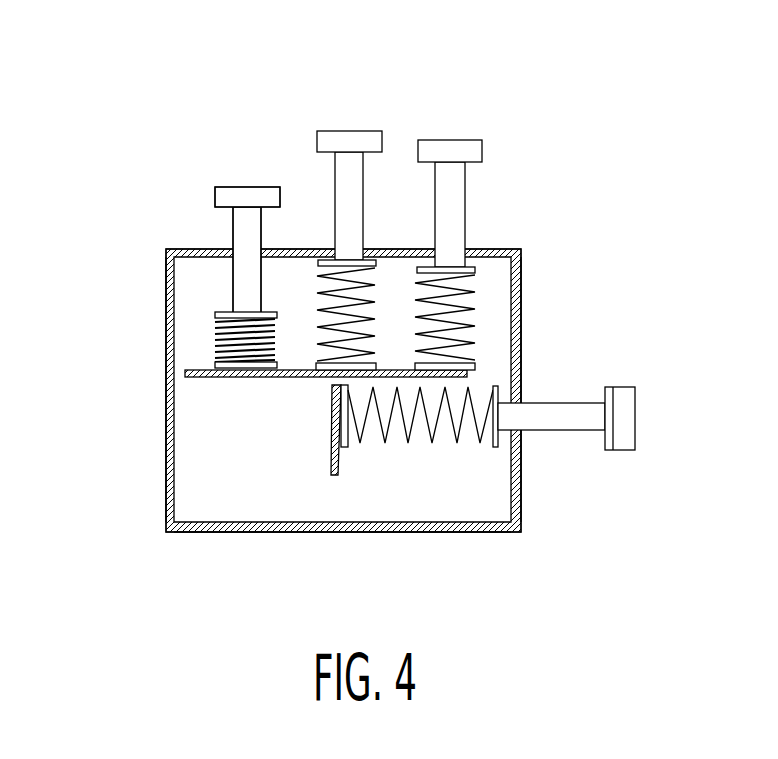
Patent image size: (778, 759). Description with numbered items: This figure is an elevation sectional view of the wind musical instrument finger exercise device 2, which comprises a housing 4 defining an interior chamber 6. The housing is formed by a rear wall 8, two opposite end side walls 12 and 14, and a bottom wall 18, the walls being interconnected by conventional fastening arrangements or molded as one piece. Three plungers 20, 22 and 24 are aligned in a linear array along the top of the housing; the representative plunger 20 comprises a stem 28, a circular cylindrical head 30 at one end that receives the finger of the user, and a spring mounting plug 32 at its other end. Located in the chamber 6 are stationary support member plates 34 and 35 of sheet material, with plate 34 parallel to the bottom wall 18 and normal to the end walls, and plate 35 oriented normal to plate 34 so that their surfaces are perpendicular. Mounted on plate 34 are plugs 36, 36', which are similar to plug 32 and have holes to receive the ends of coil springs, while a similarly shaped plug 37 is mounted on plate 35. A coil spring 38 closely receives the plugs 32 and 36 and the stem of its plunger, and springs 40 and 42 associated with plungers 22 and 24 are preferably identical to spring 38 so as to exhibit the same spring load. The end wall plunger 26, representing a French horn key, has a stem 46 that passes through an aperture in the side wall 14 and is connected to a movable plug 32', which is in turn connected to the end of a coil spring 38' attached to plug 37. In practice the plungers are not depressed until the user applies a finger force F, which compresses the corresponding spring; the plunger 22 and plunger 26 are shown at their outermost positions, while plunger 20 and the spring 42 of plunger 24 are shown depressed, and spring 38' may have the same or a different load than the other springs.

The wind musical instrument finger exercise device 2 is at (130, 507).
The housing 4 is at (542, 253).
The interior chamber 6 is at (495, 507).
The rear wall 8 is at (185, 272).
The end side wall 12 is at (166, 318).
The end side wall 14 is at (521, 330).
The bottom wall 18 is at (287, 532).
The plunger 20 is at (233, 180).
The plunger 22 is at (350, 118).
The plunger 24 is at (460, 131).
The end wall plunger 26 is at (655, 385).
The stem 28 is at (235, 228).
The head 30 is at (220, 197).
The spring mounting plug 32 is at (178, 330).
The movable plug 32' is at (540, 434).
The support member plate 34 is at (188, 373).
The support member plate 35 is at (330, 476).
The plug 36 is at (165, 387).
The plug 36' is at (422, 325).
The plug 37 is at (338, 478).
The coil spring 38 is at (152, 348).
The coil spring 38' is at (420, 488).
The spring 40 is at (322, 284).
The spring 42 is at (415, 282).
The stem 46 is at (572, 404).
The finger force F is at (250, 185).